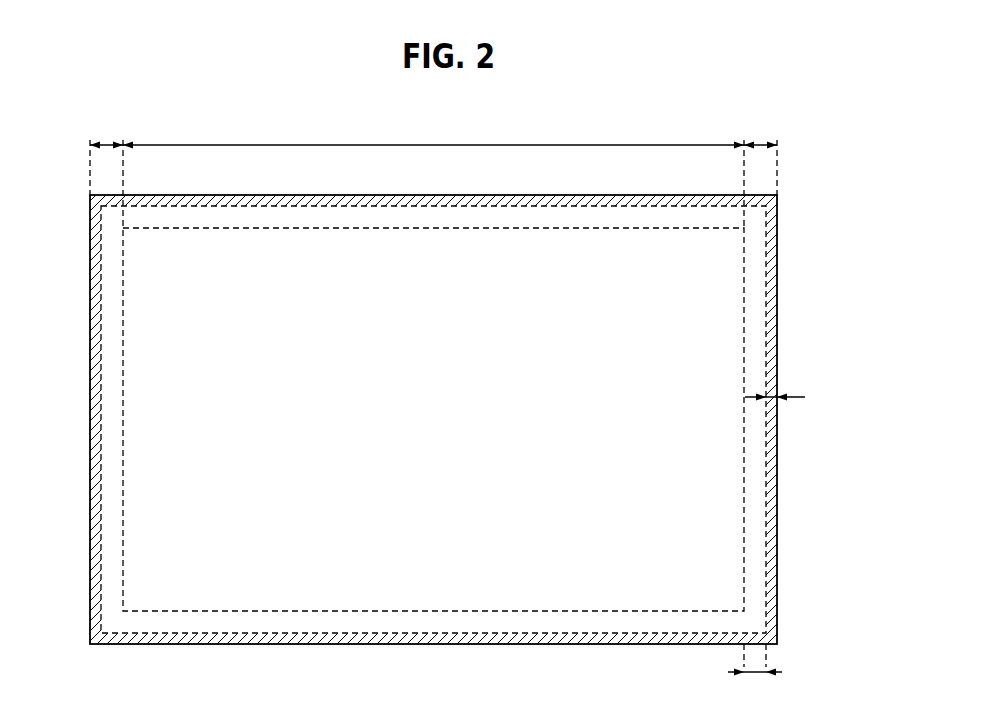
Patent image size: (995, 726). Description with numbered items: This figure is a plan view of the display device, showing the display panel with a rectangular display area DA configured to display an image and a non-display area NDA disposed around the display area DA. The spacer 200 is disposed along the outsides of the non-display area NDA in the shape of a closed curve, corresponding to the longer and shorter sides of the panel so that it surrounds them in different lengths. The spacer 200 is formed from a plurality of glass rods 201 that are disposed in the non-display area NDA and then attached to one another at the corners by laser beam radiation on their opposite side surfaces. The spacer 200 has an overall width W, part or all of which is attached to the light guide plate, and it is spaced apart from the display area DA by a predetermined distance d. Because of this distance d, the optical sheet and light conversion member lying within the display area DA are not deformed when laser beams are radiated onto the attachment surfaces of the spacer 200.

The spacer 200 is at (784, 328).
The glass rods 201 is at (430, 200).
The display area DA is at (433, 362).
The non-display area NDA is at (434, 154).
The overall width of the spacer W is at (784, 397).
The distance d is at (755, 673).